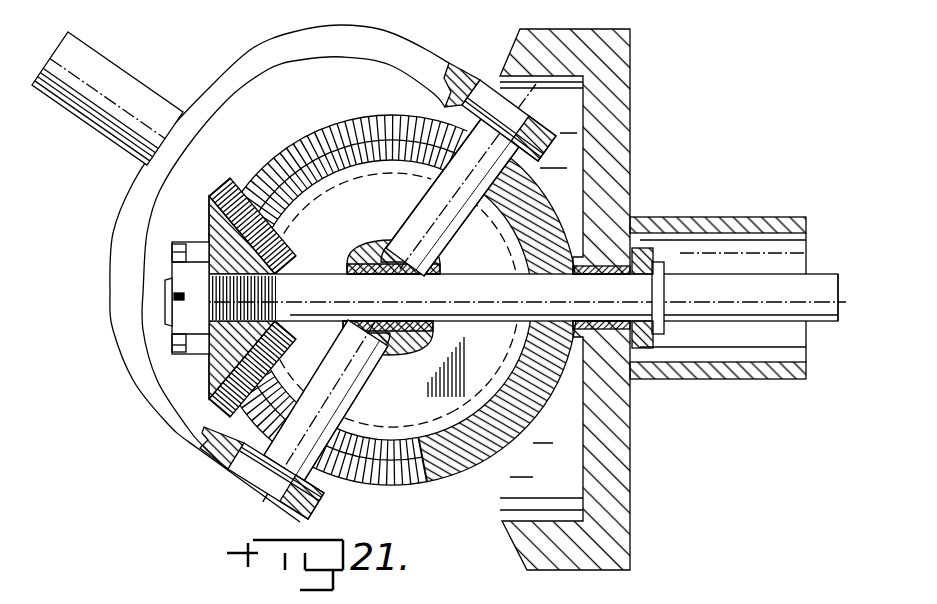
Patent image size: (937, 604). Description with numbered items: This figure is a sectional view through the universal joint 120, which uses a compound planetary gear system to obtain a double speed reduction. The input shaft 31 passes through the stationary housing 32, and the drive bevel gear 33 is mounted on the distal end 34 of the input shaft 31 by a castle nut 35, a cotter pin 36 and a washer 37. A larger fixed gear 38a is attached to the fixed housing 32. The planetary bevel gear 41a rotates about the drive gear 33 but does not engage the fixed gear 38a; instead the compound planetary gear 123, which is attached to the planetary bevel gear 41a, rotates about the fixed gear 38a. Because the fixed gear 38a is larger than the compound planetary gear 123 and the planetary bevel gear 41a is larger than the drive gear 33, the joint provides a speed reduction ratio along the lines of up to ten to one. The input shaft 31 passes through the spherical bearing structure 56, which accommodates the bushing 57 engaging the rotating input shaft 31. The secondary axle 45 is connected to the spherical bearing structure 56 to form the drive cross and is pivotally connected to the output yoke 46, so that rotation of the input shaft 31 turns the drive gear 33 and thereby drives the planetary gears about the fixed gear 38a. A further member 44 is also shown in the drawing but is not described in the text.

The input shaft 31 is at (790, 324).
The stationary housing 32 is at (723, 217).
The drive bevel gear 33 is at (238, 198).
The distal end 34 is at (174, 296).
The castle nut 35 is at (192, 242).
The cotter pin 36 is at (167, 302).
The washer 37 is at (206, 350).
The fixed gear 38a is at (517, 553).
The planetary bevel gear 41a is at (330, 127).
The input tube 44 is at (108, 56).
The secondary axle 45 is at (313, 463).
The output yoke 46 is at (268, 42).
The spherical bearing structure 56 is at (412, 234).
The bushing 57 is at (366, 253).
The universal joint 120 is at (218, 492).
The compound planetary gear 123 is at (397, 160).